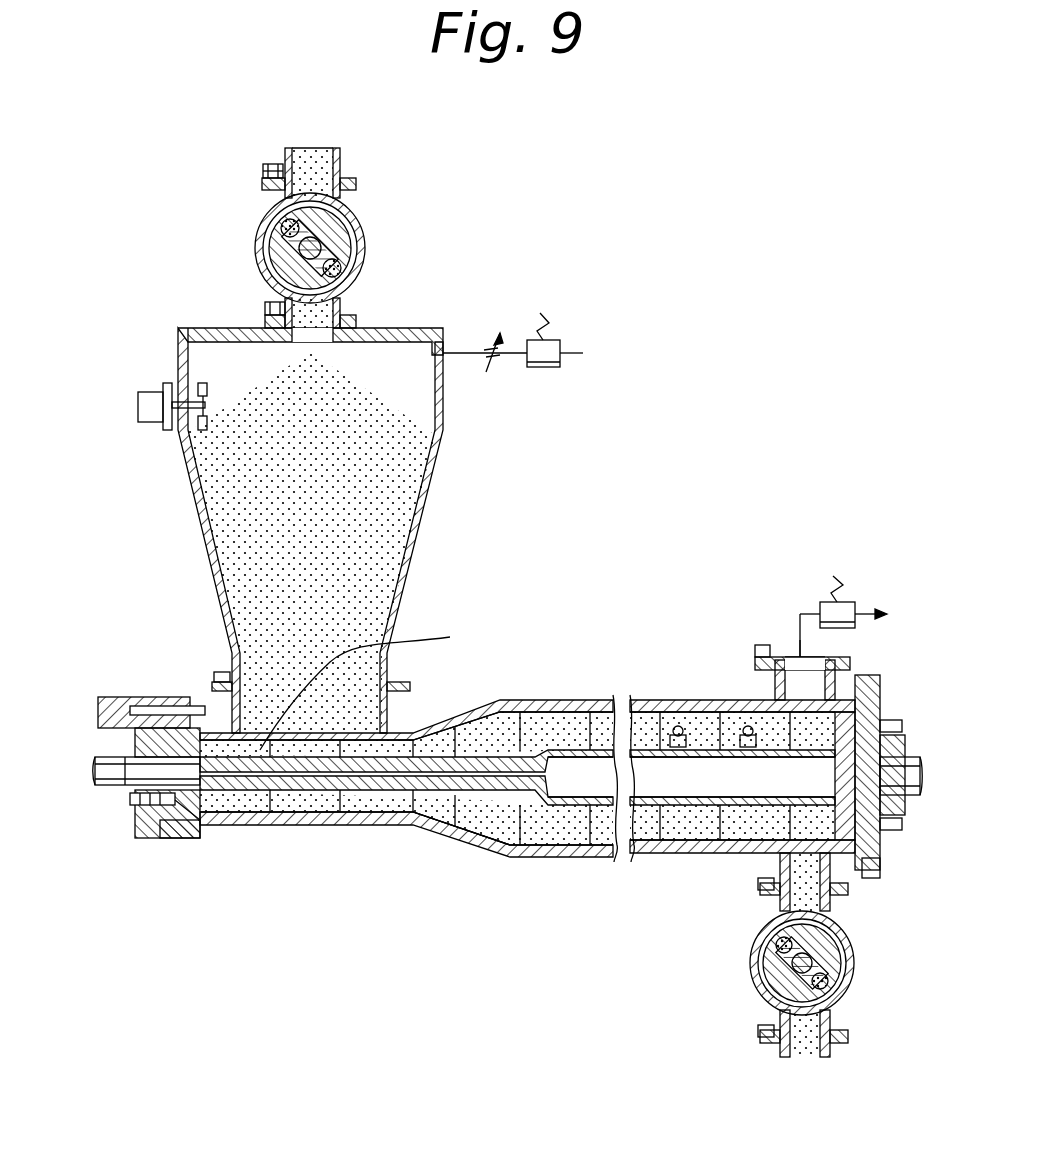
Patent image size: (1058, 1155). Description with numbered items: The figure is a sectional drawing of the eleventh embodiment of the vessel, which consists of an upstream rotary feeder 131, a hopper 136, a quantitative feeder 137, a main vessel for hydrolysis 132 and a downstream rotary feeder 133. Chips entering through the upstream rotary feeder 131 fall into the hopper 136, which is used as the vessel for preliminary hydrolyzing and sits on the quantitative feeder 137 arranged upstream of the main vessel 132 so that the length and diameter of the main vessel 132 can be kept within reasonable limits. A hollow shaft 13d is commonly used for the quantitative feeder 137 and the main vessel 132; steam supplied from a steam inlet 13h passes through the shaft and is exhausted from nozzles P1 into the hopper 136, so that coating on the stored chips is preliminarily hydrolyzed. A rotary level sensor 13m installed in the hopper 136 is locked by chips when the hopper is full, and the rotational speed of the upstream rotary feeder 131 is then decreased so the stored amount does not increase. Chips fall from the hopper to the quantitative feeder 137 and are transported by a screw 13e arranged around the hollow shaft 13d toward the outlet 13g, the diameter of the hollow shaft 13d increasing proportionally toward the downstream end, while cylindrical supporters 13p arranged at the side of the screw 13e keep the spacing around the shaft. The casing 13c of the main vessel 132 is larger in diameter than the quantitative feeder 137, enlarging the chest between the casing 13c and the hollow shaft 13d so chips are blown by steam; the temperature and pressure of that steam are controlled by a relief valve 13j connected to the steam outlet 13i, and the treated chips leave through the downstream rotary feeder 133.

The upstream rotary feeder 131 is at (388, 238).
The hopper 136 is at (438, 530).
The level sensor 13m is at (180, 370).
The quantitative feeder 137 is at (349, 792).
The hollow shaft 13d is at (138, 778).
The steam inlet 13h is at (176, 814).
The nozzles P1 is at (372, 678).
The casing 13c is at (566, 858).
The screw 13e is at (650, 856).
The cylindrical supporters 13p is at (718, 855).
The main vessel for hydrolysis 132 is at (762, 813).
The relief valve 13j is at (838, 600).
The steam outlet 13i is at (800, 657).
The outlet 13g is at (828, 862).
The downstream rotary feeder 133 is at (850, 1011).